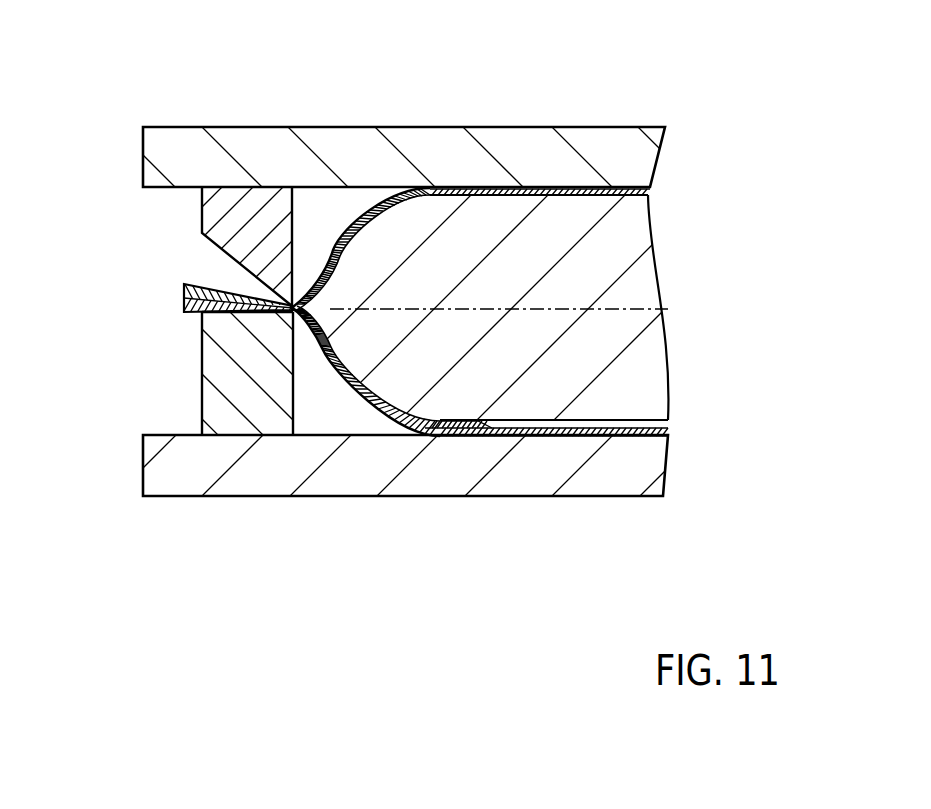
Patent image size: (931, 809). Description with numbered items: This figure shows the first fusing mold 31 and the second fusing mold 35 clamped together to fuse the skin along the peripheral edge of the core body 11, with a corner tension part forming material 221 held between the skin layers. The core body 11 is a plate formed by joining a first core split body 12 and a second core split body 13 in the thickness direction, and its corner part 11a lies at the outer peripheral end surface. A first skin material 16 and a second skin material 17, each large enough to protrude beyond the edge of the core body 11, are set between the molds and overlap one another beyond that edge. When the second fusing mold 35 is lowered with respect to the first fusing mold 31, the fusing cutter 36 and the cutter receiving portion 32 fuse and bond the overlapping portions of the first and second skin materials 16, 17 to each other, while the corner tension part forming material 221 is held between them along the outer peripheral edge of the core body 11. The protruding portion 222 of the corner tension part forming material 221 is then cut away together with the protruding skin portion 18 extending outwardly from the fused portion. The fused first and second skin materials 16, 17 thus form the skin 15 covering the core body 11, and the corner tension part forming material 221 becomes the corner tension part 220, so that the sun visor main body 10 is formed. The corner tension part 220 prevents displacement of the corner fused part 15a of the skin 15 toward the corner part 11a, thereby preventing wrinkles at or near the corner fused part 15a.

The sun visor main body 10 is at (610, 186).
The core body 11 is at (692, 565).
The corner part 11a is at (318, 273).
The first core split body 12 is at (613, 380).
The second core split body 13 is at (640, 270).
The skin 15 is at (547, 545).
The corner fused part 15a is at (293, 298).
The first skin material 16 is at (533, 437).
The second skin material 17 is at (488, 195).
The protruding skin portion 18 is at (184, 312).
The first fusing mold 31 is at (397, 473).
The cutter receiving portion 32 is at (213, 333).
The second fusing mold 35 is at (470, 142).
The fusing cutter 36 is at (225, 253).
The corner tension part 220 is at (305, 330).
The corner tension part forming material 221 is at (304, 433).
The protruding portion 222 is at (220, 313).